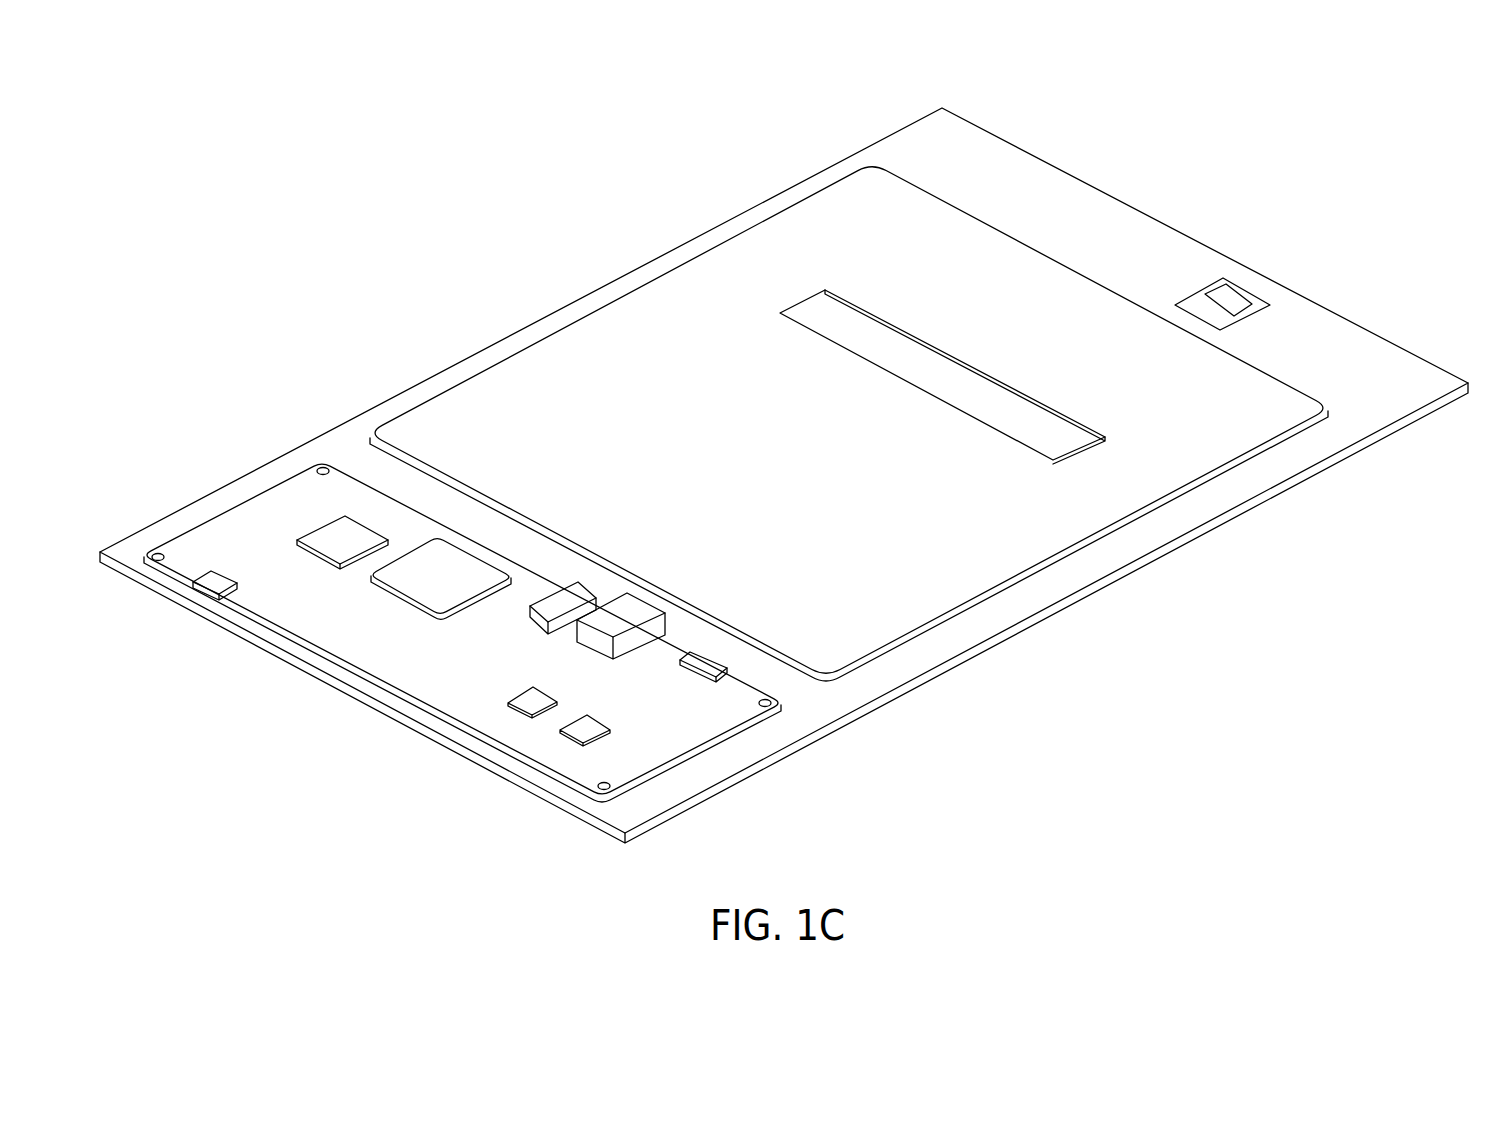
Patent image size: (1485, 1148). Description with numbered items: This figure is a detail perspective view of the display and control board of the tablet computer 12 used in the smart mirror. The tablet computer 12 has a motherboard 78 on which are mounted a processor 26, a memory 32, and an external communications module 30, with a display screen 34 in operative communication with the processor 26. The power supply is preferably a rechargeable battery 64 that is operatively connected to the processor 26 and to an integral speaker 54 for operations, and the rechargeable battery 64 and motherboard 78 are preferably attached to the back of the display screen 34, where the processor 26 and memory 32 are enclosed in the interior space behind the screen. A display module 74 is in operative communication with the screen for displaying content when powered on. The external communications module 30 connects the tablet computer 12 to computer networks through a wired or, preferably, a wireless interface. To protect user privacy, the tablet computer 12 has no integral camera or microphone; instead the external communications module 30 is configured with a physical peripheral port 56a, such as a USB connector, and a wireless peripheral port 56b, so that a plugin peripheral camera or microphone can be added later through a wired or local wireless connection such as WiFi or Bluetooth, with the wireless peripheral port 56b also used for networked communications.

The tablet computer 12 is at (467, 312).
The display screen 34 is at (885, 148).
The rechargeable battery 64 is at (727, 270).
The motherboard 78 is at (280, 500).
The memory 32 is at (318, 555).
The processor 26 is at (407, 583).
The integral speaker 54 is at (538, 620).
The display module 74 is at (632, 640).
The external communications module 30 is at (583, 730).
The physical peripheral port 56a is at (207, 590).
The wireless peripheral port 56b is at (705, 668).